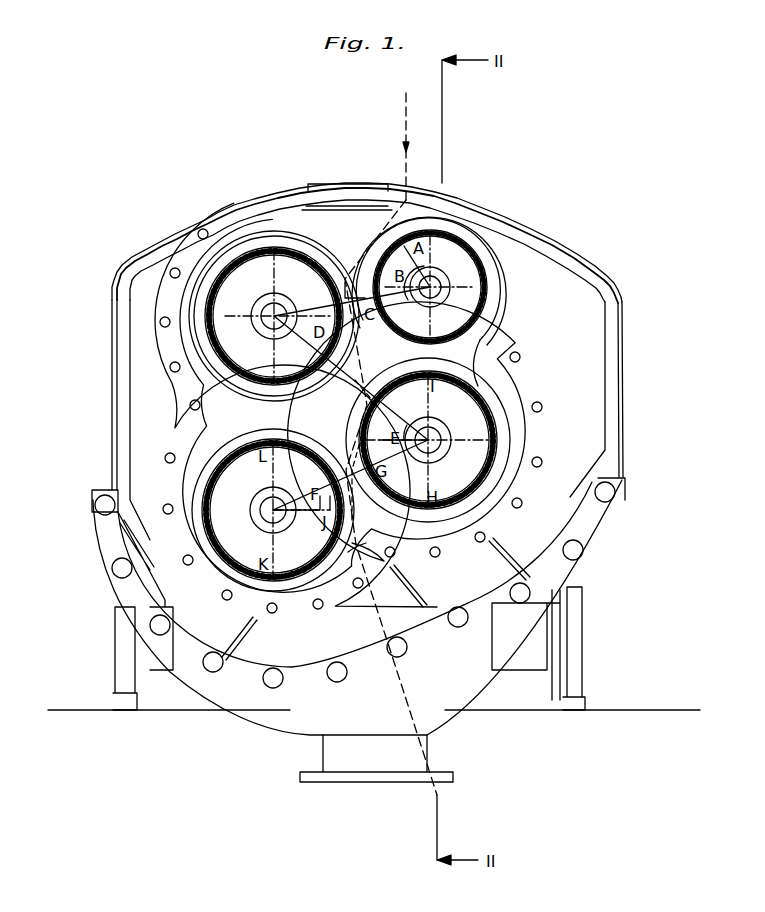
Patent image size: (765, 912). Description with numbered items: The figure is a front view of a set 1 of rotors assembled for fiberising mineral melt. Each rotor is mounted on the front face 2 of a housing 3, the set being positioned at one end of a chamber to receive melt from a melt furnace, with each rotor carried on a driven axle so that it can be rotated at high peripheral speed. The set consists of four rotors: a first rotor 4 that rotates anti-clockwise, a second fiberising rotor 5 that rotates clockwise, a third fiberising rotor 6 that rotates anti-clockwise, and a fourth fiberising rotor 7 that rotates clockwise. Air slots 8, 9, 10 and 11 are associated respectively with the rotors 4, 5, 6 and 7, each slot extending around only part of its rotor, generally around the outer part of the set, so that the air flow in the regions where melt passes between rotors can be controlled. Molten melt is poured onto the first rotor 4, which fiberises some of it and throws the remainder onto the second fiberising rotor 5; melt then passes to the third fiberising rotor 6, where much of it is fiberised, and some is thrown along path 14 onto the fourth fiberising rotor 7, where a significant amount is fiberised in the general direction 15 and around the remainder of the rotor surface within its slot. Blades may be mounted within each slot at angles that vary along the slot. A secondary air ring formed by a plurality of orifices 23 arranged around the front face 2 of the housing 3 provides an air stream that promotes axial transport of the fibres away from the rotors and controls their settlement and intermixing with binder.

The set of rotors 1 is at (494, 272).
The front face 2 is at (446, 352).
The housing 3 is at (623, 303).
The first rotor 4 is at (447, 250).
The second fiberising rotor 5 is at (258, 268).
The third fiberising rotor 6 is at (462, 410).
The fourth fiberising rotor 7 is at (297, 465).
The air slot 8 is at (482, 315).
The air slot 9 is at (207, 322).
The air slot 10 is at (497, 438).
The air slot 11 is at (215, 463).
The path 14 is at (352, 450).
The general direction of fiberising 15 is at (360, 562).
The orifices 23 is at (347, 680).